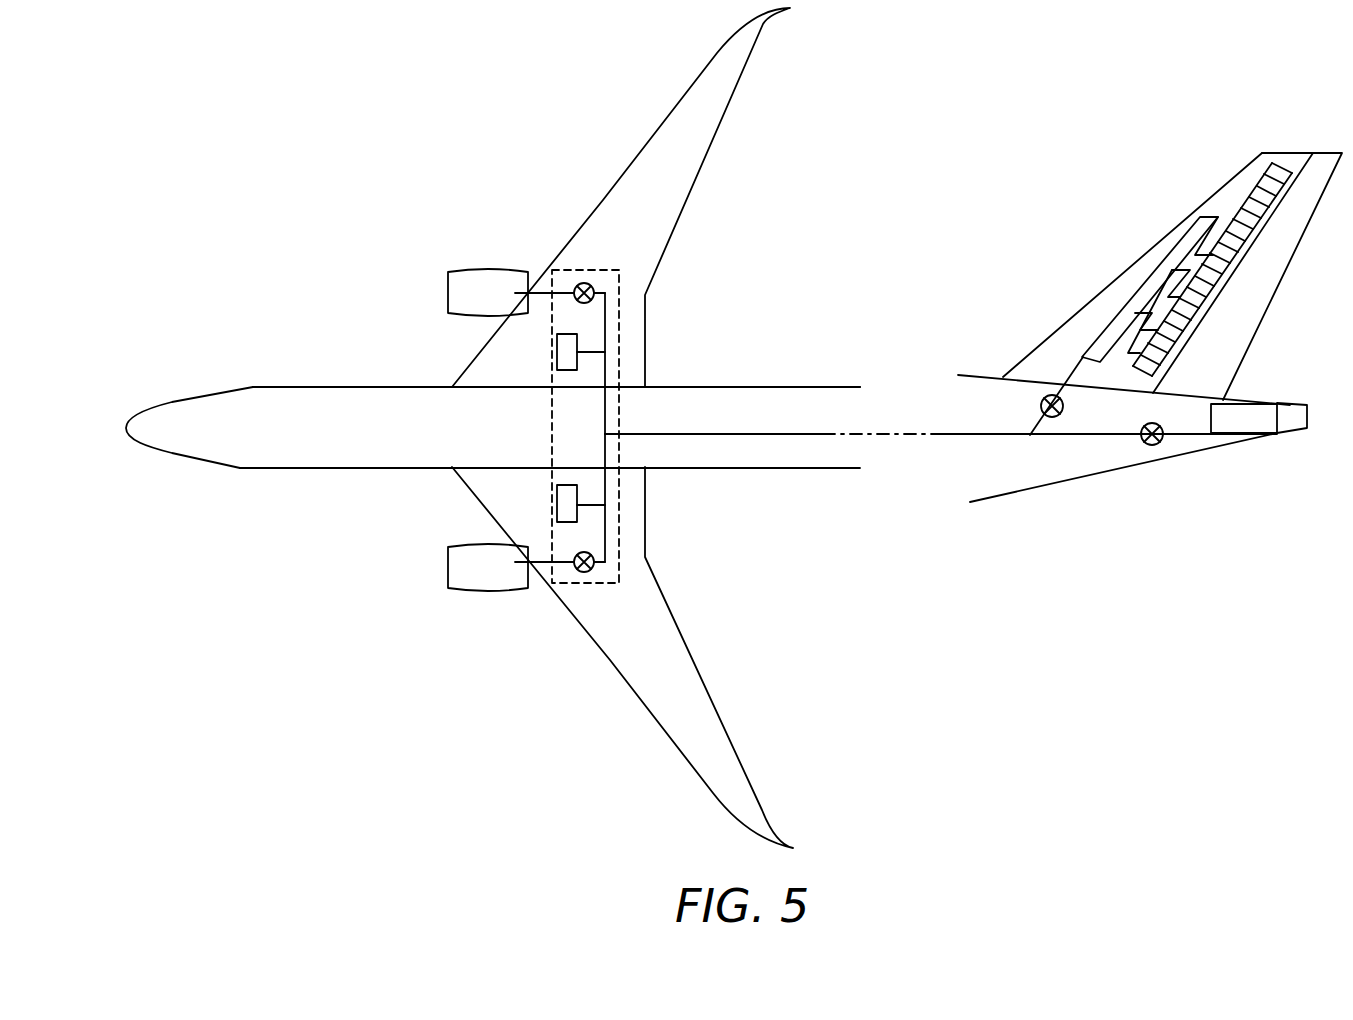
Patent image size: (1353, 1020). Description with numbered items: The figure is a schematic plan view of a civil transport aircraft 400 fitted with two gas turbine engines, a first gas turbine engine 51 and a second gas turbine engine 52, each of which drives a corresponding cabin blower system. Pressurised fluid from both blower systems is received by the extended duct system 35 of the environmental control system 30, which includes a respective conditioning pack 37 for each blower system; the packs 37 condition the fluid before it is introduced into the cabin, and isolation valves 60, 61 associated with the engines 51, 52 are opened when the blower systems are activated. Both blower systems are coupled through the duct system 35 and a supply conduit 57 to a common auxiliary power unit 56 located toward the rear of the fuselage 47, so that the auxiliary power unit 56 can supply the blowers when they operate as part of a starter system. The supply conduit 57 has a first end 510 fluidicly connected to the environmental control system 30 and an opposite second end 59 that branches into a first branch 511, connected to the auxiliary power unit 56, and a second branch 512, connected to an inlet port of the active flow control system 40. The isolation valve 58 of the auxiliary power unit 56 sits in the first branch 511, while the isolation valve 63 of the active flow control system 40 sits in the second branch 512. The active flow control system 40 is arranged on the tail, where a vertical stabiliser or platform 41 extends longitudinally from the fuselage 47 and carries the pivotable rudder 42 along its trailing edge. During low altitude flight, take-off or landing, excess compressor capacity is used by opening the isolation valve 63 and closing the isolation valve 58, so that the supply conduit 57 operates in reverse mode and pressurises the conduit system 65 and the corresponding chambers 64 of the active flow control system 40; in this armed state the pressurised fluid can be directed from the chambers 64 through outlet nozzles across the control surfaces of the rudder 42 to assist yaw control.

The aircraft 400 is at (278, 378).
The environmental control system 30 is at (587, 270).
The duct system 35 is at (605, 450).
The conditioning pack 37 is at (557, 350).
The active flow control system 40 is at (1107, 254).
The vertical stabiliser 41 is at (1055, 360).
The rudder 42 is at (1233, 335).
The fuselage 47 is at (832, 388).
The first gas turbine engine 51 is at (458, 292).
The second gas turbine engine 52 is at (458, 565).
The auxiliary power unit 56 is at (1238, 425).
The supply conduit 57 is at (770, 436).
The isolation valve of the auxiliary power unit 58 is at (1150, 445).
The second end of the supply conduit 59 is at (1020, 438).
The isolation valve 60 is at (592, 284).
The isolation valve 61 is at (590, 575).
The isolation valve of the active flow control system 63 is at (1041, 406).
The chambers 64 is at (1278, 168).
The conduit system 65 is at (1162, 303).
The first end of the supply conduit 510 is at (626, 438).
The first branch 511 is at (1048, 437).
The second branch 512 is at (1063, 403).